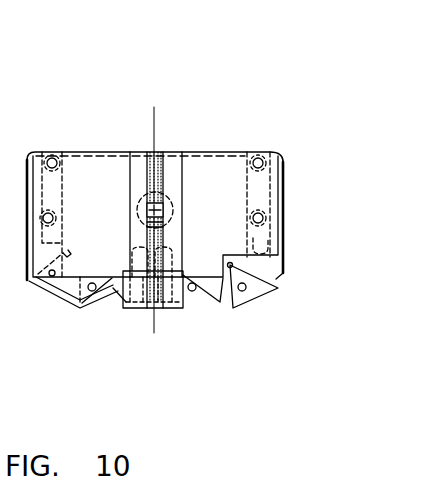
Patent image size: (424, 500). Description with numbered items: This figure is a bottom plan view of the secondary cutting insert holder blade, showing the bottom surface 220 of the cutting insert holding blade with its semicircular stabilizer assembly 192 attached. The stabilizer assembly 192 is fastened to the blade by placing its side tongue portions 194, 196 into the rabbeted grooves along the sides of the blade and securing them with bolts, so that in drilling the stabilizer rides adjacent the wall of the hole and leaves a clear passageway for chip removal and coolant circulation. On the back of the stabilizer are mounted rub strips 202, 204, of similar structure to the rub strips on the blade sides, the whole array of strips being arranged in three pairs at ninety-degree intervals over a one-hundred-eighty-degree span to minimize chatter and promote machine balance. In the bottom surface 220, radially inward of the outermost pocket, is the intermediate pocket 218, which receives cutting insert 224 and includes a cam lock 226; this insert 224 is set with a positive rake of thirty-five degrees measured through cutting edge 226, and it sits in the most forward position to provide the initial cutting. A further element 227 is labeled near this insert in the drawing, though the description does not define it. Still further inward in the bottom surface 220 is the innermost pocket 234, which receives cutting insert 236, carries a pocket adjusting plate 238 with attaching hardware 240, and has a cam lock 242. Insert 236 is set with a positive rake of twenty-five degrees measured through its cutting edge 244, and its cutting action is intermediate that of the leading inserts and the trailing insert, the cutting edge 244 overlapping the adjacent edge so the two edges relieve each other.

The stabilizer assembly 192 is at (97, 173).
The side tongue portion 194 is at (50, 182).
The side tongue portion 196 is at (258, 188).
The rub strip 202 is at (153, 155).
The rub strip 204 is at (157, 217).
The intermediate pocket 218 is at (243, 290).
The bottom surface 220 is at (262, 267).
The cutting insert 224 is at (238, 298).
The cam lock 226 is at (236, 302).
The pivot pin 227 is at (248, 289).
The innermost pocket 234 is at (208, 287).
The cutting insert 236 is at (197, 290).
The pocket adjusting plate 238 is at (118, 298).
The attaching hardware 240 is at (140, 308).
The cam lock 242 is at (193, 291).
The cutting edge 244 is at (188, 298).